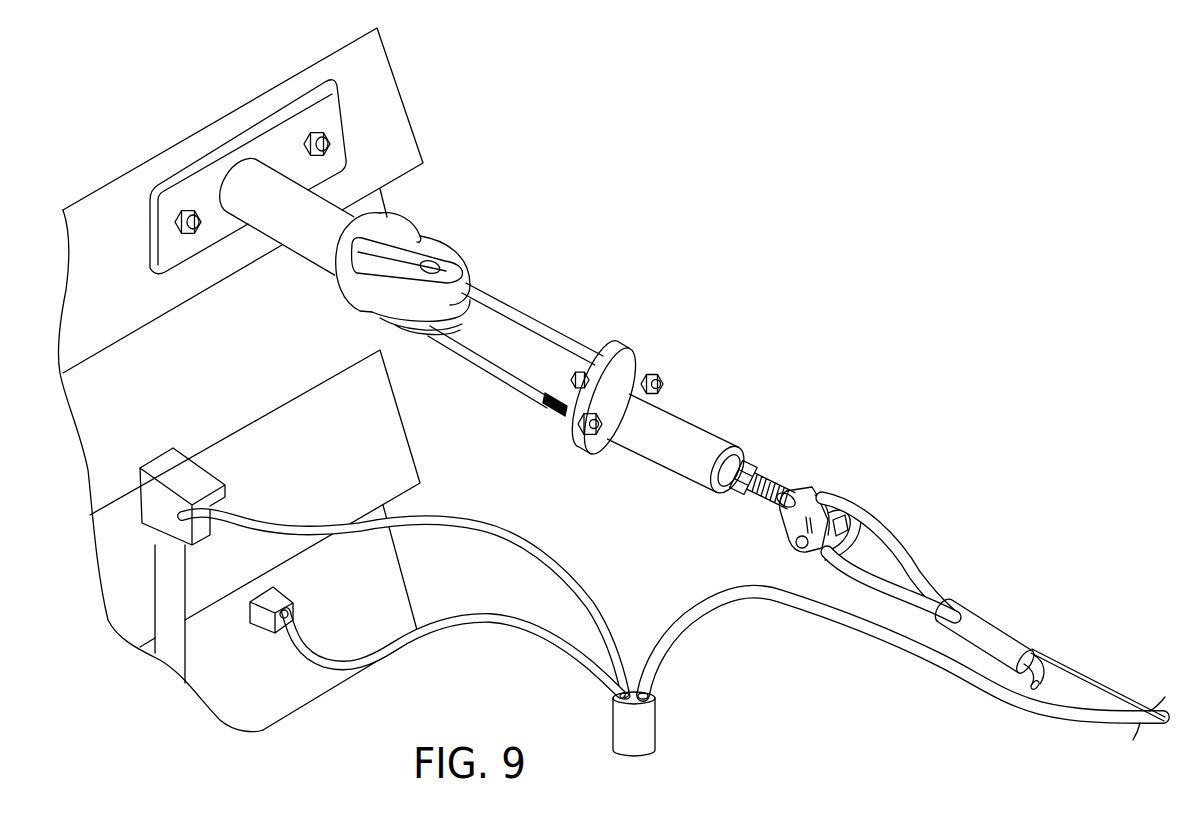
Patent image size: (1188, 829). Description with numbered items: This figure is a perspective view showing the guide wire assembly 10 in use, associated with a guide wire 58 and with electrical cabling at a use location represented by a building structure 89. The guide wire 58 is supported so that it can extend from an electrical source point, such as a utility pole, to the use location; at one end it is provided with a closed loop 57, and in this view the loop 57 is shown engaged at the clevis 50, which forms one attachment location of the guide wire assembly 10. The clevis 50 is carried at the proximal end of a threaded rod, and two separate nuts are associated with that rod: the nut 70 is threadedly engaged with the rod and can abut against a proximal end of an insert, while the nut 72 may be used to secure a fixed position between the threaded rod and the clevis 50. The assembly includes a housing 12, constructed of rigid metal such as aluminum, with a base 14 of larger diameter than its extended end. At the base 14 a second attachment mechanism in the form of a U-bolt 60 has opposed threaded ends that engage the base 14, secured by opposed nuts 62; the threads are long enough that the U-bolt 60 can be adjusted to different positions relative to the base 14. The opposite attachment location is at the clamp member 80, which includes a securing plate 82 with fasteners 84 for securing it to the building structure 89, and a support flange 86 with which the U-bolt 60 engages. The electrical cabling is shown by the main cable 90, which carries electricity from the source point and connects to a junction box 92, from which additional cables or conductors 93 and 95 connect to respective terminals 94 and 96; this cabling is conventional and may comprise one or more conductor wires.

The guide wire assembly 10 is at (718, 388).
The housing 12 is at (740, 430).
The base 14 is at (635, 357).
The clevis 50 is at (830, 487).
The closed loop 57 is at (898, 546).
The guide wire 58 is at (1067, 671).
The U-bolt 60 is at (545, 310).
The nuts 62 is at (660, 377).
The nut 70 is at (753, 470).
The nut 72 is at (785, 510).
The clamp member 80 is at (426, 216).
The securing plate 82 is at (253, 148).
The fasteners 84 is at (195, 202).
The support flange 86 is at (458, 268).
The building structure 89 is at (378, 443).
The cable 90 is at (882, 647).
The junction box 92 is at (650, 723).
The cable 93 is at (487, 528).
The terminal 94 is at (166, 495).
The cable 95 is at (455, 630).
The terminal 96 is at (268, 632).